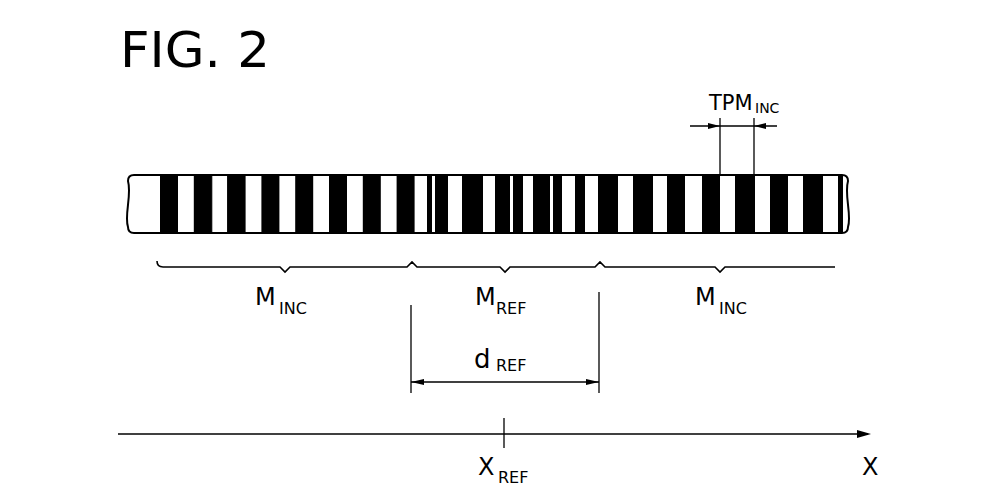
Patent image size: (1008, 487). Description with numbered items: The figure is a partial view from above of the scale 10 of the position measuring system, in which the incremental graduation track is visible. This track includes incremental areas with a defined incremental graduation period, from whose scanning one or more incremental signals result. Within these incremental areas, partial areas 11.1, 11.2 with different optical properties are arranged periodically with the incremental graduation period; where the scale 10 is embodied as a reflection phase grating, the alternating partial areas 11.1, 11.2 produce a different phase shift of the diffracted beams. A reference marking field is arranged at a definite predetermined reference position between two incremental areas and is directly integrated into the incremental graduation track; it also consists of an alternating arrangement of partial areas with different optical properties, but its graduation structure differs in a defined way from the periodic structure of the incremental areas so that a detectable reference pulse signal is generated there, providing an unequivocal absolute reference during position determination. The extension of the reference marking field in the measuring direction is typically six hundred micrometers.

The scale 10 is at (113, 236).
The partial area 11.1 is at (217, 186).
The partial area 11.2 is at (336, 180).